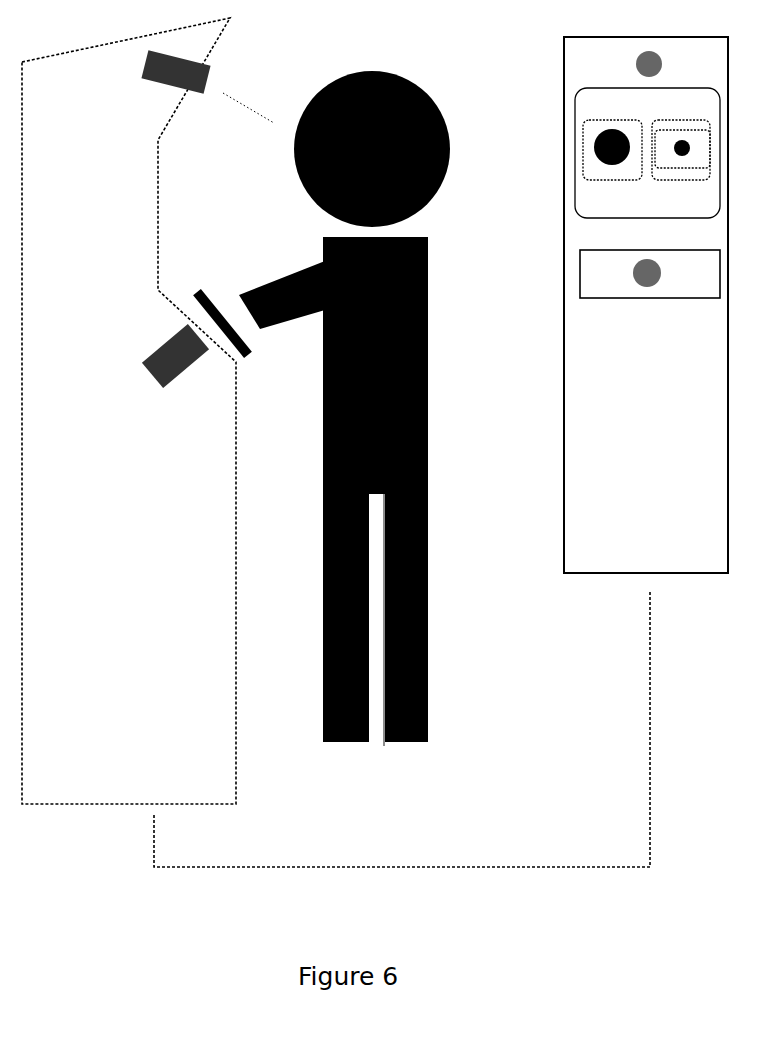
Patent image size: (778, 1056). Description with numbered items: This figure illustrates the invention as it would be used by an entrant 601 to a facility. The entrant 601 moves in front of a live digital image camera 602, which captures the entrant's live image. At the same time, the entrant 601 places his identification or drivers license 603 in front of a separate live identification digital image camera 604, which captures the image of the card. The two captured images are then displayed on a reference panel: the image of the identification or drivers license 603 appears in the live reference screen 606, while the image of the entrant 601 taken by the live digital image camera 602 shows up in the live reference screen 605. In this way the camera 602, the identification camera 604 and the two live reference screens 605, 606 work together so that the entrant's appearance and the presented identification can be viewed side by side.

The entrant 601 is at (344, 438).
The live digital image camera 602 is at (376, 86).
The identification or drivers license 603 is at (222, 310).
The live identification digital image camera 604 is at (431, 339).
The live reference screen 605 is at (612, 165).
The live reference screen 606 is at (681, 165).